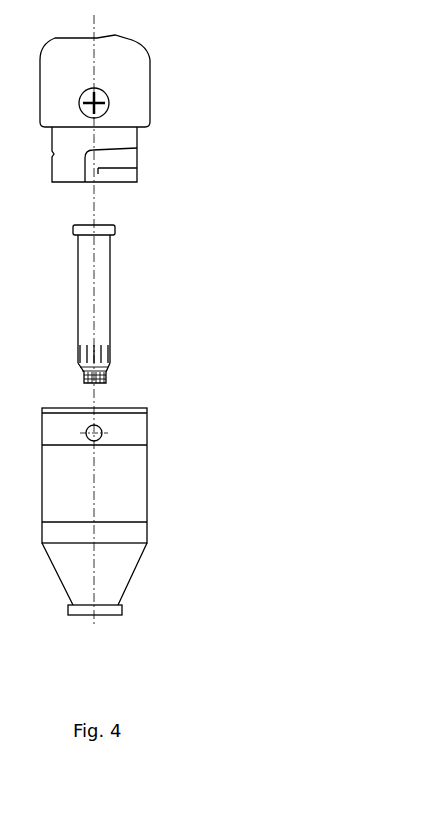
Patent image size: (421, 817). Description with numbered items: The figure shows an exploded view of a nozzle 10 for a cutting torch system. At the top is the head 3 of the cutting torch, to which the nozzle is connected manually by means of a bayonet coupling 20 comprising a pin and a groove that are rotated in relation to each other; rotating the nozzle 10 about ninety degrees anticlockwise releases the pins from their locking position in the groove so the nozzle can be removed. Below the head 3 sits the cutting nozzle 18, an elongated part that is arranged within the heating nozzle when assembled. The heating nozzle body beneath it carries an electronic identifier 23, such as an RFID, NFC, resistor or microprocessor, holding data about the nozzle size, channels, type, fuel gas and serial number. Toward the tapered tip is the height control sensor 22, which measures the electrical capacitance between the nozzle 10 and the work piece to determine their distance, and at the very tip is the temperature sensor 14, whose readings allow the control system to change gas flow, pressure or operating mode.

The nozzle 10 is at (193, 343).
The head 3 is at (128, 70).
The bayonet coupling 20 is at (128, 158).
The cutting nozzle 18 is at (102, 295).
The electronic identifier 23 is at (150, 423).
The height control sensor 22 is at (125, 595).
The temperature sensor 14 is at (115, 623).